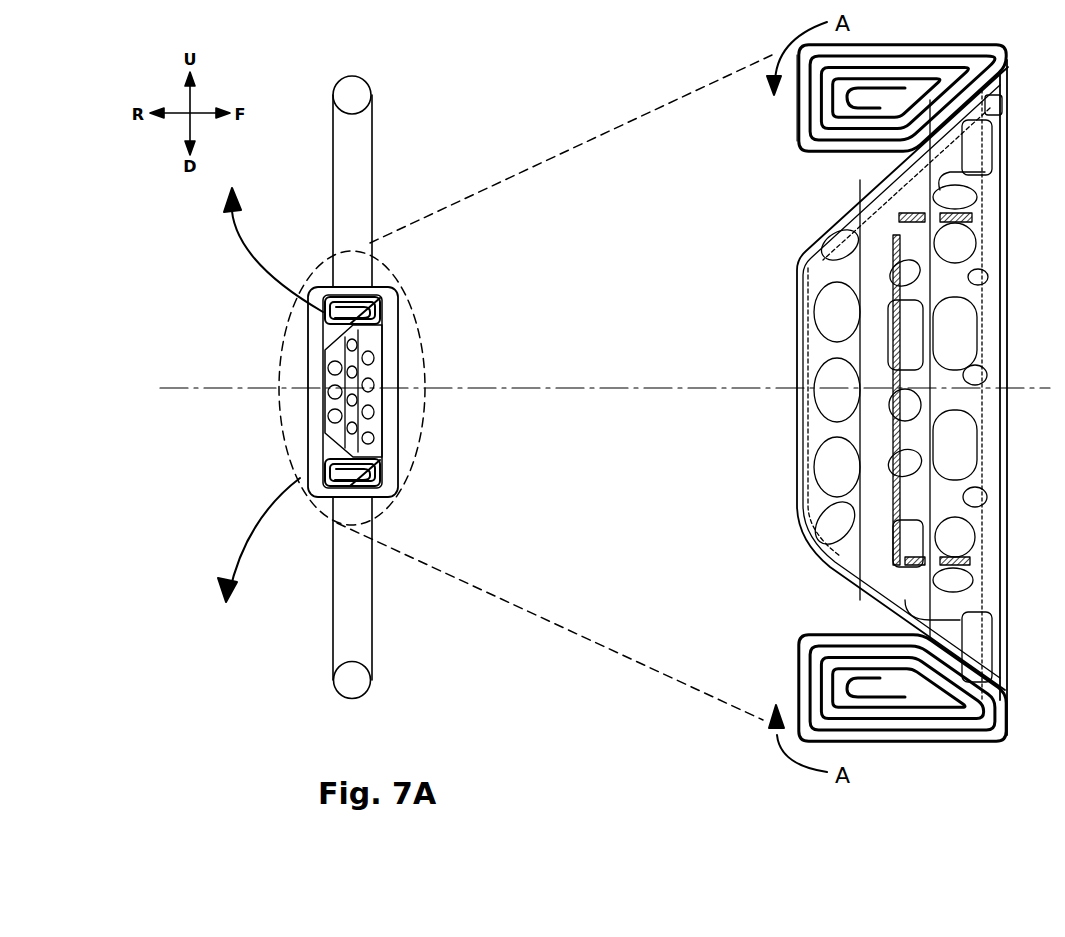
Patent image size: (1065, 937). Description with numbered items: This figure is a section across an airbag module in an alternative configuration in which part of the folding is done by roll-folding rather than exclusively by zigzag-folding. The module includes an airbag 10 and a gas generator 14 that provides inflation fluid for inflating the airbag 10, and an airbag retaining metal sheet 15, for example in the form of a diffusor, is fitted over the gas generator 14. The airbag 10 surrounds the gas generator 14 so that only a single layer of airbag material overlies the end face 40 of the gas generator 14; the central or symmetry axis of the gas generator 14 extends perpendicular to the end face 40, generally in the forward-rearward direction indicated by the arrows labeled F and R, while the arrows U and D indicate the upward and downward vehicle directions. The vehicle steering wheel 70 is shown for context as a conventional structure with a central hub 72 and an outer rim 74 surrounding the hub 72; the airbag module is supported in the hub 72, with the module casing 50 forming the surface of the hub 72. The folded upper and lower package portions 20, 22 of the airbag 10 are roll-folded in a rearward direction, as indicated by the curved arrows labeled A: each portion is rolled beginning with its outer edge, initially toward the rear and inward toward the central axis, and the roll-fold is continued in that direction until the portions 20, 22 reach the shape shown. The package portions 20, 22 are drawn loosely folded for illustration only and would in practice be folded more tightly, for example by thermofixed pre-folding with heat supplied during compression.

The airbag 10 is at (327, 305).
The gas generator 14 is at (398, 338).
The airbag retaining metal sheet 15 is at (847, 345).
The upper package portion 20 is at (803, 148).
The lower package portion 22 is at (803, 637).
The end face 40 is at (793, 417).
The module casing 50 is at (308, 350).
The vehicle steering wheel 70 is at (373, 177).
The central hub 72 is at (398, 447).
The outer rim 74 is at (360, 90).